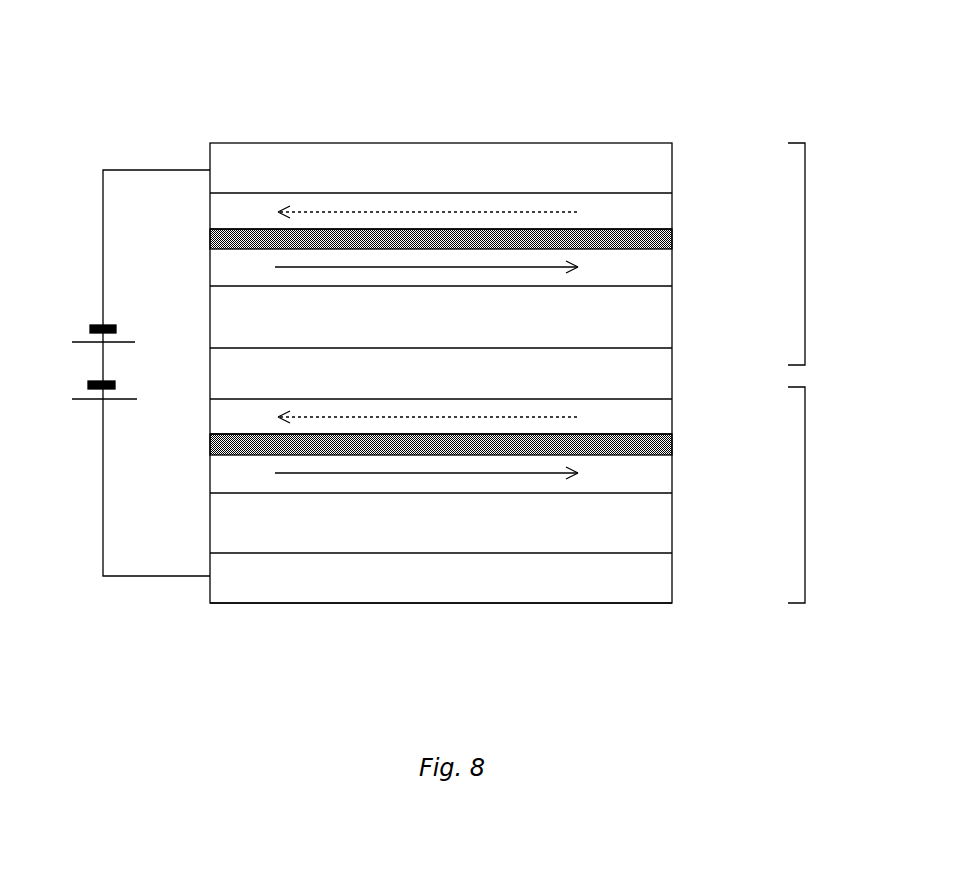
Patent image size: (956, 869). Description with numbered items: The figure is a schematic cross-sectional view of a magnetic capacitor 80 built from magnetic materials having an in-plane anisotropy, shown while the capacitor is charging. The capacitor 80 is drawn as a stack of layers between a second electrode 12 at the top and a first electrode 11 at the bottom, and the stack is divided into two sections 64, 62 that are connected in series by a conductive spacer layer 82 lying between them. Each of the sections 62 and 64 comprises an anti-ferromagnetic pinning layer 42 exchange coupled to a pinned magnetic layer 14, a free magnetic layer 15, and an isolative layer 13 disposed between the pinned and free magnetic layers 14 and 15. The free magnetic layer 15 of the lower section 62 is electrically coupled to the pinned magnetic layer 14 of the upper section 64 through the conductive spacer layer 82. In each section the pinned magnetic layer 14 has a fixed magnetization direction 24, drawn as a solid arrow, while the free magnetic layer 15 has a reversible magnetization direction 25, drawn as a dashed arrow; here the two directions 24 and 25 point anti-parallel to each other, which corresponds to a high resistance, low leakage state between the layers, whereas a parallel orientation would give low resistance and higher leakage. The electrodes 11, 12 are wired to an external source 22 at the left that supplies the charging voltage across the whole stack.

The capacitor 80 is at (690, 110).
The second electrode 12 is at (672, 158).
The free magnetic layer 15 is at (672, 200).
The isolative layer 13 is at (672, 238).
The pinned magnetic layer 14 is at (672, 275).
The anti-ferromagnetic pinning layer 42 is at (672, 323).
The conductive spacer layer 82 is at (672, 375).
The first electrode 11 is at (672, 587).
The reversible magnetization direction 25 is at (435, 213).
The fixed magnetization direction 24 is at (433, 473).
The voltage source 22 is at (90, 325).
The section 64 is at (805, 255).
The section 62 is at (805, 495).